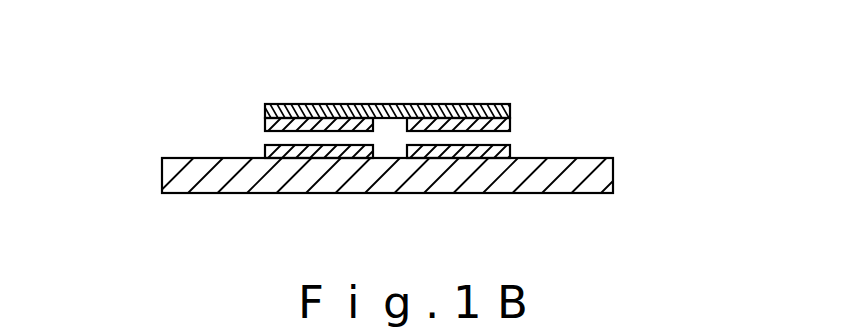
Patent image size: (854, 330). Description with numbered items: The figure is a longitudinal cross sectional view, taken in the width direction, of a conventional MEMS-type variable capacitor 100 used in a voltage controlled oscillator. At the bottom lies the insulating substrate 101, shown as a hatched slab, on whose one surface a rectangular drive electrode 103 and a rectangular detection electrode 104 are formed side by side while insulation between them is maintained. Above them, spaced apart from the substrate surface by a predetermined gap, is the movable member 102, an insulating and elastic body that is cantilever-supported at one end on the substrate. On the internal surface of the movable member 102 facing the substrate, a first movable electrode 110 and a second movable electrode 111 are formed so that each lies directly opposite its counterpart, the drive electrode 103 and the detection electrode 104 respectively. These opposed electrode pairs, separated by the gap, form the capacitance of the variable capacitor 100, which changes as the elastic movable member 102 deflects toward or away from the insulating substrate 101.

The variable capacitor 100 is at (172, 172).
The insulating substrate 101 is at (603, 170).
The movable member 102 is at (510, 105).
The drive electrode 103 is at (322, 148).
The detection electrode 104 is at (462, 148).
The first movable electrode 110 is at (318, 104).
The second movable electrode 111 is at (457, 104).